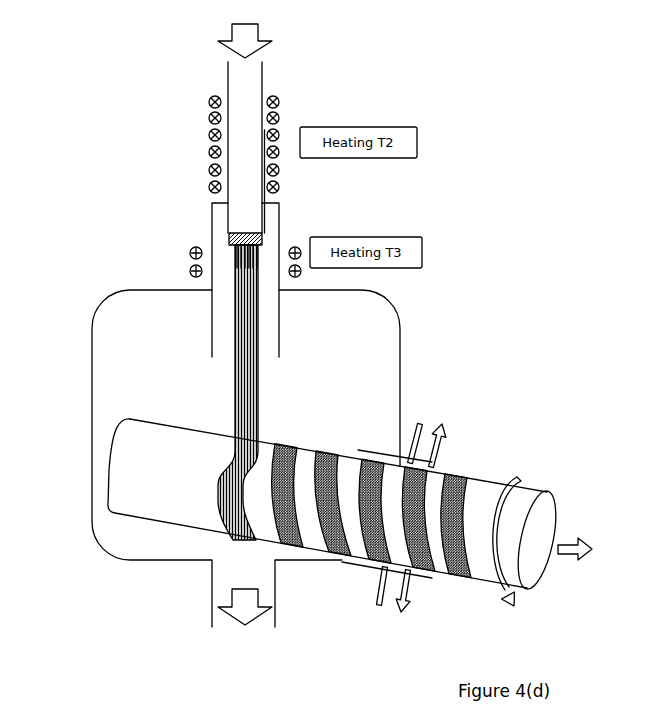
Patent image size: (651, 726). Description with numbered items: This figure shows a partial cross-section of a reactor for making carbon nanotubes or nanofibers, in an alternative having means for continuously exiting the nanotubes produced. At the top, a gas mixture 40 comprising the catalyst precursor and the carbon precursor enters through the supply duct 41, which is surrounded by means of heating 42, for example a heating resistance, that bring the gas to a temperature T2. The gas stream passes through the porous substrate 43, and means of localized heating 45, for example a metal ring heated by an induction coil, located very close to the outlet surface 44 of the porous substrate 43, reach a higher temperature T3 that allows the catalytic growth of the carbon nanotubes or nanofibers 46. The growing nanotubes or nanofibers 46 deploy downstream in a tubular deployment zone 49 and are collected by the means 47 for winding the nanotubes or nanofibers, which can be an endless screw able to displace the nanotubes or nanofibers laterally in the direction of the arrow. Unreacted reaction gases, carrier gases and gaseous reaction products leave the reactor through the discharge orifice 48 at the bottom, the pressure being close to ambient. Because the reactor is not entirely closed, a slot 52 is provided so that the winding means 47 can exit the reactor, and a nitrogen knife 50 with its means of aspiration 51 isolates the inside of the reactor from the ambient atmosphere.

The gas mixture 40 is at (245, 41).
The supply duct 41 is at (246, 147).
The means of heating 42 is at (234, 144).
The porous substrate 43 is at (229, 242).
The outlet surface 44 is at (234, 252).
The means of localized heating 45 is at (235, 262).
The carbon nanotubes or nanofibers 46 is at (236, 370).
The means for winding the nanotubes or nanofibers 47 is at (335, 505).
The discharge orifice 48 is at (245, 607).
The tubular deployment zone 49 is at (210, 323).
The nitrogen knife 50 is at (399, 515).
The means of aspiration 51 is at (421, 520).
The slot 52 is at (443, 470).